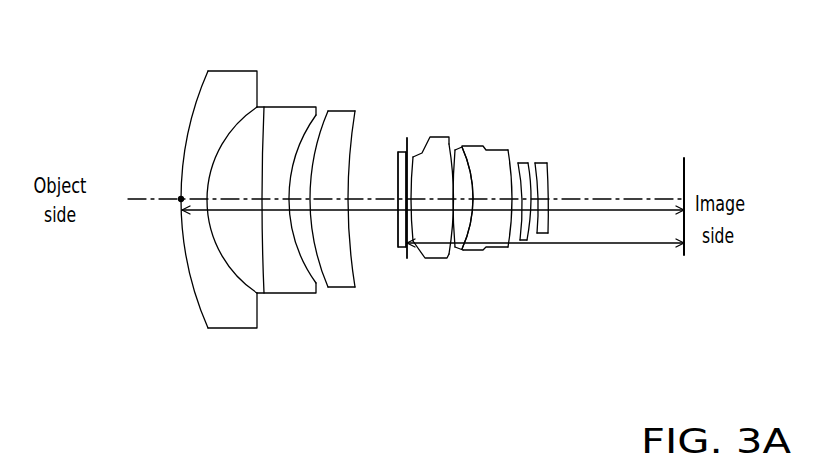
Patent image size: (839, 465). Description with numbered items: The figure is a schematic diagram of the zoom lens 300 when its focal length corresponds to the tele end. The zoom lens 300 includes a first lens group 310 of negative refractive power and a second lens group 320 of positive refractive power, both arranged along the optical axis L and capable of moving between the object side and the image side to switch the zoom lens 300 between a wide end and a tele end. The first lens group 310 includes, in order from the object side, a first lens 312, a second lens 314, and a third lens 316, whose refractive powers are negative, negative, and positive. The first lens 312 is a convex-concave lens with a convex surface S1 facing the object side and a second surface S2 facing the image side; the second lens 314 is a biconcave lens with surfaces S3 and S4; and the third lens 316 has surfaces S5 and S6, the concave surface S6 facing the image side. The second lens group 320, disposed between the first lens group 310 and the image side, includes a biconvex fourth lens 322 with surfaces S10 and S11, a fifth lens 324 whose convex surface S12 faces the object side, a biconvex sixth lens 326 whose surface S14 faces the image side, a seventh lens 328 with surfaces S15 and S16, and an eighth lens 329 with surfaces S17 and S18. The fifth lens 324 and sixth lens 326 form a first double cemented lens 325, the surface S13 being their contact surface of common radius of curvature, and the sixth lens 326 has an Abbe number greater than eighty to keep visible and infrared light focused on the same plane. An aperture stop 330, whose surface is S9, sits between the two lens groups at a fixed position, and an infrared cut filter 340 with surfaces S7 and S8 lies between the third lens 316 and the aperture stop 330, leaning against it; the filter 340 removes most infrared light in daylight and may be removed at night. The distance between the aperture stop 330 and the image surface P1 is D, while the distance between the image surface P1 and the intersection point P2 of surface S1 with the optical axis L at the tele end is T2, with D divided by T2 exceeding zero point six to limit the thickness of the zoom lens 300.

The surface S1 is at (187, 136).
The surface S2 is at (226, 139).
The surface S3 is at (263, 135).
The surface S4 is at (303, 133).
The surface S5 is at (321, 118).
The surface S6 is at (359, 136).
The surface S7 is at (396, 175).
The surface S8 is at (402, 218).
The surface S9 is at (405, 142).
The surface S10 is at (441, 155).
The surface S11 is at (456, 157).
The surface S12 is at (464, 165).
The surface S13 is at (470, 168).
The surface S14 is at (507, 160).
The surface S15 is at (519, 162).
The surface S16 is at (527, 165).
The surface S17 is at (541, 169).
The surface S18 is at (548, 216).
The image surface P1 is at (685, 170).
The intersection point P2 is at (181, 199).
The optical axis L is at (397, 200).
The distance T2 is at (238, 210).
The distance D is at (613, 245).
The zoom lens 300 is at (359, 239).
The first lens group 310 is at (238, 215).
The first lens 312 is at (185, 202).
The second lens 314 is at (286, 198).
The third lens 316 is at (335, 209).
The second lens group 320 is at (495, 229).
The fourth lens 322 is at (420, 215).
The fifth lens 324 is at (450, 190).
The first double cemented lens 325 is at (469, 209).
The sixth lens 326 is at (487, 204).
The seventh lens 328 is at (529, 214).
The eighth lens 329 is at (569, 221).
The aperture stop 330 is at (388, 198).
The infrared cut filter 340 is at (398, 251).